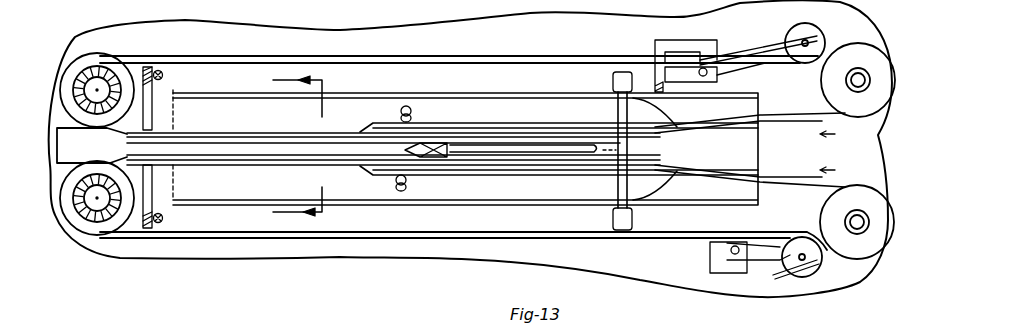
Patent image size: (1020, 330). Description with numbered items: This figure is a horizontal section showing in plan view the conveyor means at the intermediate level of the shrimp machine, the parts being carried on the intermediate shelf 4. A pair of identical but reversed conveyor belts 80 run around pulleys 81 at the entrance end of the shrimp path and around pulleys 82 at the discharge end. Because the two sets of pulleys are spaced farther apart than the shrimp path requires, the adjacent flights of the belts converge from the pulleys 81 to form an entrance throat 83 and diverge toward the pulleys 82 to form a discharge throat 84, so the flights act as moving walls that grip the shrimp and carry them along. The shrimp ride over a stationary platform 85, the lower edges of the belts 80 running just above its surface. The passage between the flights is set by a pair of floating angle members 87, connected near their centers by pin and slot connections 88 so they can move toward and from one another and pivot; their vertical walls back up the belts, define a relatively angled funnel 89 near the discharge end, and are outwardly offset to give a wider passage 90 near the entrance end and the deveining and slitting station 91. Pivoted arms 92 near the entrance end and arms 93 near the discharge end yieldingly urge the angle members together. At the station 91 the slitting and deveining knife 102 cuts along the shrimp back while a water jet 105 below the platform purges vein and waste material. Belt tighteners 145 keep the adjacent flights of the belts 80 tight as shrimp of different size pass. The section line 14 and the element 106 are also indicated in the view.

The intermediate shelf 4 is at (566, 44).
The section line 14 is at (283, 148).
The conveyor belts 80 is at (478, 60).
The pulleys 81 is at (860, 188).
The pulleys 82 is at (63, 88).
The entrance throat 83 is at (762, 150).
The discharge throat 84 is at (60, 163).
The platform 85 is at (711, 150).
The floating angle members 87 is at (487, 148).
The pin and slot connections 88 is at (408, 107).
The angled funnel section 89 is at (263, 143).
The wider passage 90 is at (653, 147).
The deveining and slitting station 91 is at (551, 139).
The pivoted arms 92 is at (604, 92).
The arms 93 is at (157, 97).
The slitting and deveining knife 102 is at (543, 152).
The water jet 105 is at (420, 150).
The slide plate 106 is at (600, 155).
The belt tighteners 145 is at (803, 23).